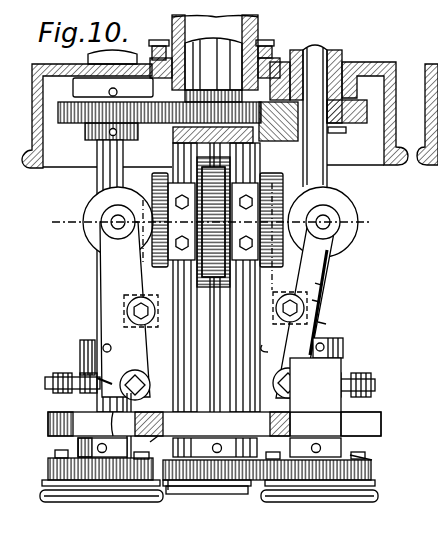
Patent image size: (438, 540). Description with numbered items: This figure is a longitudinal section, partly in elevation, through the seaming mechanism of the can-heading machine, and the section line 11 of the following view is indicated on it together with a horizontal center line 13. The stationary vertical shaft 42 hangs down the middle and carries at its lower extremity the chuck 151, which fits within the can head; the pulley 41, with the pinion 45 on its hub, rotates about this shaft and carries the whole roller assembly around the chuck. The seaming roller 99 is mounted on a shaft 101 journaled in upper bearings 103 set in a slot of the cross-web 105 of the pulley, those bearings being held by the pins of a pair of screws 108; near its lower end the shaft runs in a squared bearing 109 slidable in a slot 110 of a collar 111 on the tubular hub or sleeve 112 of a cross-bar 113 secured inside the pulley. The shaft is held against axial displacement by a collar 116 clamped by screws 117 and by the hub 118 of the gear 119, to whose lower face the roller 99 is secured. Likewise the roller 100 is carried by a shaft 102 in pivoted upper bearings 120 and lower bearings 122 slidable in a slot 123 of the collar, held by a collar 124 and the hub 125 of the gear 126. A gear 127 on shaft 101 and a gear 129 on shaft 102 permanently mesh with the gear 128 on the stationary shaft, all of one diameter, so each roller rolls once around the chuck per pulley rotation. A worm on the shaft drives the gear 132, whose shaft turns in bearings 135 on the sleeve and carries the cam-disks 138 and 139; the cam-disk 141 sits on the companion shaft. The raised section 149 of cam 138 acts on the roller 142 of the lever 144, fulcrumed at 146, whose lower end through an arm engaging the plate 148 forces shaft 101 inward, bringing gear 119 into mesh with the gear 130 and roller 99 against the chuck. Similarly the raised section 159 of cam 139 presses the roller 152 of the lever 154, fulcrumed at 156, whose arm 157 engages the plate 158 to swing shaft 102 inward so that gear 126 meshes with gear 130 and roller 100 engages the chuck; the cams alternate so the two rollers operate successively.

The shaft 11 is at (213, 42).
The center line 13 is at (56, 222).
The pulley 41 is at (382, 150).
The fixed vertical shaft 42 is at (266, 40).
The pinion 45 is at (160, 40).
The seaming roller 99 is at (110, 490).
The seaming roller 100 is at (352, 495).
The shaft 101 is at (100, 323).
The shaft 102 is at (326, 323).
The upper bearings 103 is at (116, 90).
The cross-web 105 is at (352, 70).
The screws 108 is at (92, 128).
The squared bearing 109 is at (128, 358).
The slot 110 is at (140, 438).
The collar 111 is at (214, 424).
The tubular hub or sleeve 112 is at (274, 341).
The cross-bar 113 is at (172, 134).
The collar 116 is at (80, 349).
The screws 117 is at (140, 370).
The hub 118 is at (95, 447).
The gear 119 is at (58, 463).
The upper bearings 120 is at (322, 44).
The bearings 122 is at (342, 400).
The slot 123 is at (382, 430).
The collar 124 is at (344, 348).
The hub 125 is at (370, 458).
The gear 126 is at (362, 468).
The gear 127 is at (62, 110).
The gear 128 is at (278, 124).
The gear 129 is at (344, 124).
The gear 130 is at (180, 482).
The gear 132 is at (276, 309).
The bearings 135 is at (164, 262).
The cam-disk 138 is at (122, 270).
The cam-disk 139 is at (330, 262).
The cam-disk 141 is at (46, 381).
The roller 142 is at (100, 203).
The lever 144 is at (148, 255).
The fulcrum 146 is at (156, 311).
The plate 148 is at (95, 378).
The raised section 149 is at (105, 238).
The chuck 151 is at (244, 494).
The roller 152 is at (352, 236).
The lever 154 is at (320, 285).
The fulcrum 156 is at (322, 302).
The arm 157 is at (300, 386).
The plate 158 is at (380, 366).
The raised section 159 is at (340, 202).